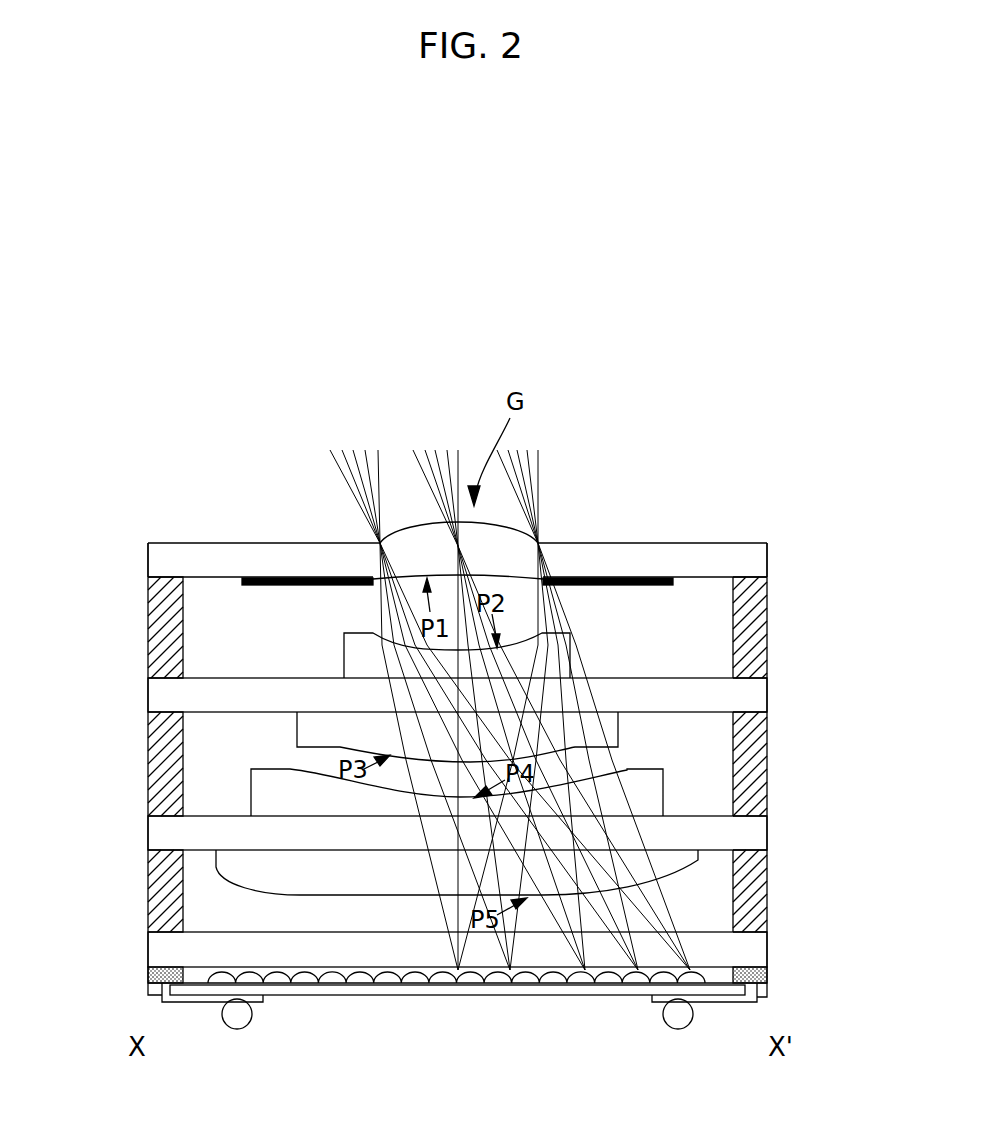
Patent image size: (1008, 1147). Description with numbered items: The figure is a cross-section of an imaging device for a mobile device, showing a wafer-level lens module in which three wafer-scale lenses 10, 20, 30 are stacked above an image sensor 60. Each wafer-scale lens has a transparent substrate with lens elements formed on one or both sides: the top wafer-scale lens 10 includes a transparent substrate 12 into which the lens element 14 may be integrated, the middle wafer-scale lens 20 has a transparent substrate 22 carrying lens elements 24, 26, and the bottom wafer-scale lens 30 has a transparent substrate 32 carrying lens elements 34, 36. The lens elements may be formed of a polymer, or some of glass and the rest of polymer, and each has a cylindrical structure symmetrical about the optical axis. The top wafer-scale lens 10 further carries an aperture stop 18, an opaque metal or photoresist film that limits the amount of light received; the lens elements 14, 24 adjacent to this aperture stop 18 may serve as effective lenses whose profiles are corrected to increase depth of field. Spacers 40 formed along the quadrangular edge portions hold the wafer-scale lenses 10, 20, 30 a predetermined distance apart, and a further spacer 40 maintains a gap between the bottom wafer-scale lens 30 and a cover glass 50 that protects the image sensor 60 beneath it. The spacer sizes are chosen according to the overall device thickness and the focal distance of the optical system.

The wafer-scale lens 10 is at (702, 396).
The transparent substrate 12 is at (660, 558).
The lens element 14 is at (506, 522).
The aperture stop 18 is at (576, 577).
The wafer-scale lens 20 is at (852, 640).
The transparent substrate 22 is at (745, 697).
The lens element 24 is at (632, 662).
The lens element 26 is at (632, 719).
The wafer-scale lens 30 is at (854, 798).
The transparent substrate 32 is at (740, 835).
The lens element 34 is at (690, 808).
The lens element 36 is at (700, 880).
The spacer 40 is at (163, 872).
The cover glass 50 is at (745, 950).
The image sensor 60 is at (165, 986).